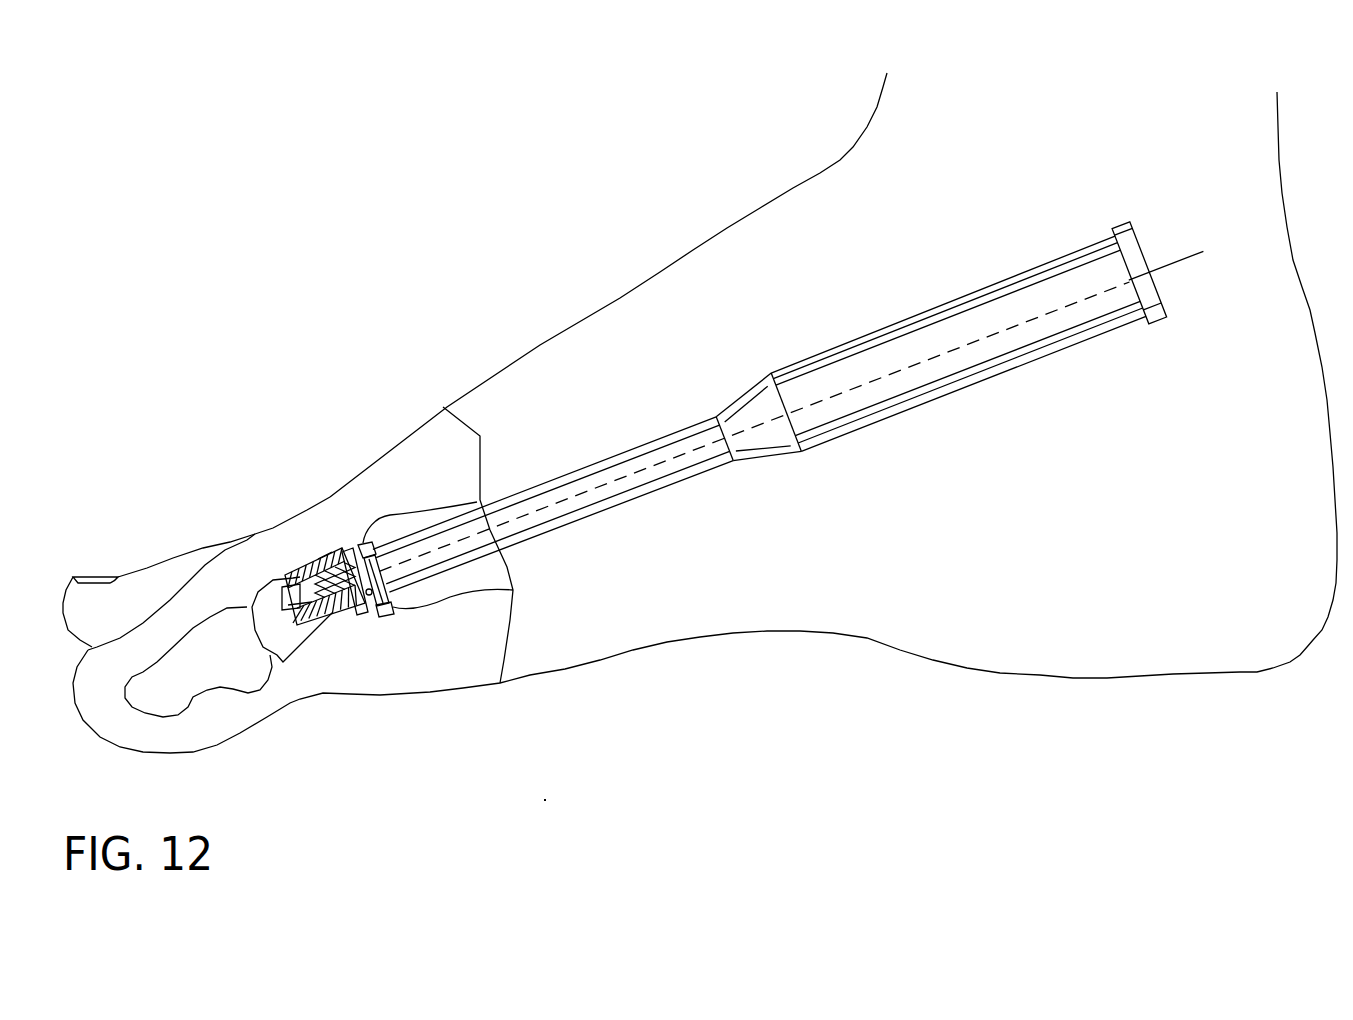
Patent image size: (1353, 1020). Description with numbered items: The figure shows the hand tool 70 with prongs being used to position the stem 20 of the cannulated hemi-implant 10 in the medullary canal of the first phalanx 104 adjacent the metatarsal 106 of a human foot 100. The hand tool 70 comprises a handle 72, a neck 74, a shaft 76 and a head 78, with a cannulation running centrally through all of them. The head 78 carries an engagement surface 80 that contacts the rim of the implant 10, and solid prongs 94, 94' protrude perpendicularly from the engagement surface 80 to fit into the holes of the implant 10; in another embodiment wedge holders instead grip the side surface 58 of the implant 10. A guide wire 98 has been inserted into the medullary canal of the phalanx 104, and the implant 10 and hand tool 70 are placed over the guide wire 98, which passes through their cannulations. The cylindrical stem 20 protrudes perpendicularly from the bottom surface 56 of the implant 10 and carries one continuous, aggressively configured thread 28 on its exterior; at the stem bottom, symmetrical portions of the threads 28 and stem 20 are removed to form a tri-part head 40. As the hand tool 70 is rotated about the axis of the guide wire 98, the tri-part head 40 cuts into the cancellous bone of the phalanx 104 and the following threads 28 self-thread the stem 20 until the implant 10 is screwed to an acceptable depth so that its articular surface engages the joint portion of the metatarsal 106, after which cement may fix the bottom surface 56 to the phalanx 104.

The implant 10 is at (328, 545).
The stem 20 is at (321, 670).
The threads 28 is at (350, 680).
The tri-part head 40 is at (266, 690).
The bottom surface 56 is at (290, 580).
The side surface 58 is at (398, 648).
The hand tool 70 is at (1010, 383).
The handle 72 is at (947, 308).
The neck 74 is at (746, 394).
The shaft 76 is at (682, 432).
The head 78 is at (365, 543).
The engagement surface 80 is at (423, 624).
The solid prong 94 is at (431, 643).
The solid prong 94' is at (292, 493).
The guide wire 98 is at (1175, 266).
The human foot 100 is at (680, 263).
The first phalanx 104 is at (268, 650).
The metatarsal 106 is at (453, 507).